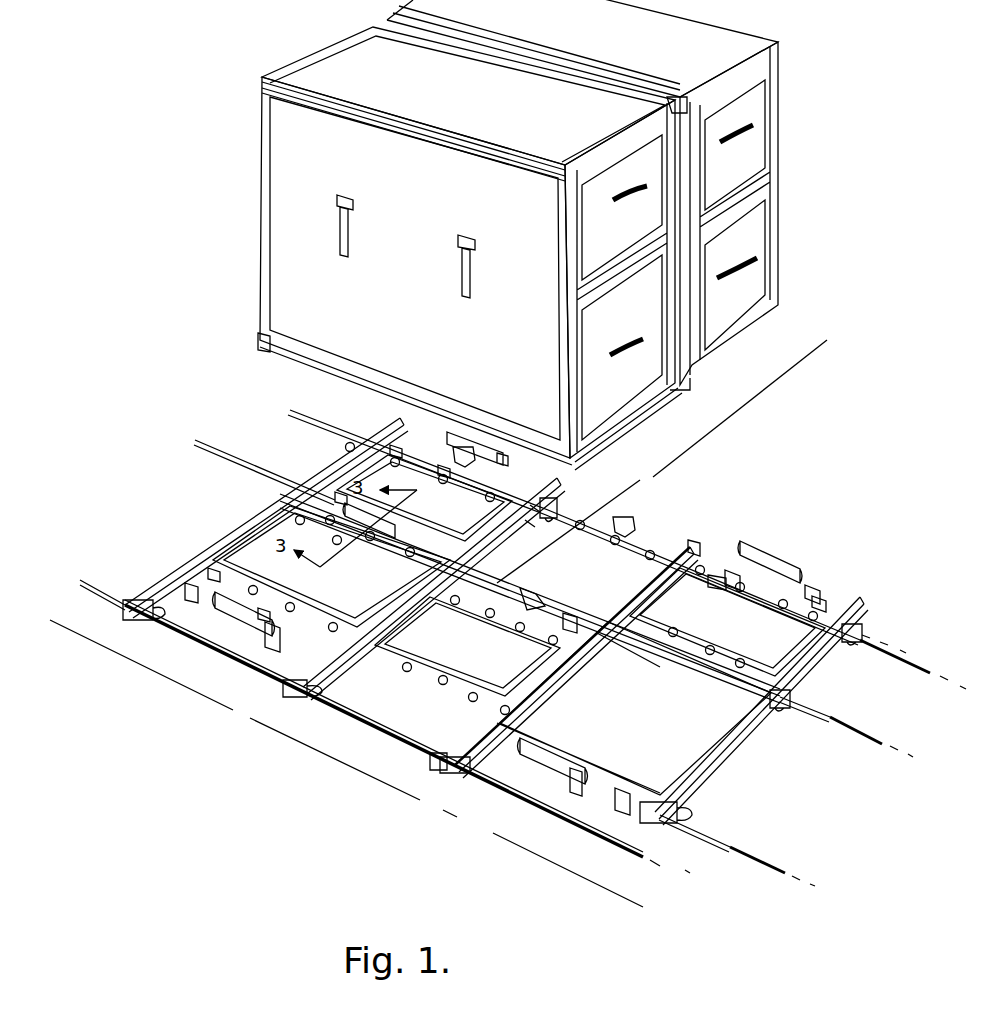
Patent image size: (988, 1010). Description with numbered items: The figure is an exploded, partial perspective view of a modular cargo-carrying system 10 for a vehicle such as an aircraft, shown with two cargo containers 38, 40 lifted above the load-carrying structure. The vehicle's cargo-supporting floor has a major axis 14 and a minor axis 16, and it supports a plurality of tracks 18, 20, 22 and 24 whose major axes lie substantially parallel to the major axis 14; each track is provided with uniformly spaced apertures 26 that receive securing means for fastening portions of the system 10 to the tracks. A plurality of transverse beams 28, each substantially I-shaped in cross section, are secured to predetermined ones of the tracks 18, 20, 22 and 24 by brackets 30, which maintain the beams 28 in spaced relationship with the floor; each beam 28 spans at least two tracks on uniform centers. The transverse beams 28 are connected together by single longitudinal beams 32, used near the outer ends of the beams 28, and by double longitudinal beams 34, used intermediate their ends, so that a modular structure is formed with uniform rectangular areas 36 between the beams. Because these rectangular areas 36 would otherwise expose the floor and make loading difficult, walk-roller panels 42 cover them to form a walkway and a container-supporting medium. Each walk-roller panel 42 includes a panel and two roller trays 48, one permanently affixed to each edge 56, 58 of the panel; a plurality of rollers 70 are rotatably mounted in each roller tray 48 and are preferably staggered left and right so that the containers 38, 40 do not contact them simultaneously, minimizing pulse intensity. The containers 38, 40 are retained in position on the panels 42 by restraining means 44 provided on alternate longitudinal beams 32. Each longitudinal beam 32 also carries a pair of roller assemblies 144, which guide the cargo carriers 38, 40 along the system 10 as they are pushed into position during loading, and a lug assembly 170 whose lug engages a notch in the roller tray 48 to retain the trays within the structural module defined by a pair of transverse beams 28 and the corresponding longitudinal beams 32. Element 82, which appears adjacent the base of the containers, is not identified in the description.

The cargo-carrying system 10 is at (797, 475).
The major axis 14 is at (150, 677).
The minor axis 16 is at (717, 428).
The track 18 is at (663, 872).
The track 20 is at (753, 839).
The track 22 is at (861, 720).
The track 24 is at (906, 647).
The apertures 26 is at (872, 648).
The transverse beam 28 is at (217, 543).
The bracket 30 is at (552, 506).
The single longitudinal beam 32 is at (412, 748).
The double longitudinal beam 34 is at (566, 612).
The rectangular area 36 is at (689, 540).
The cargo container 38 is at (413, 259).
The cargo container 40 is at (681, 64).
The walk-roller panel 42 is at (474, 522).
The restraining means 44 is at (268, 637).
The roller tray 48 is at (731, 576).
The edge 56 is at (812, 588).
The edge 58 is at (498, 594).
The roller 70 is at (340, 495).
The container base 82 is at (650, 402).
The roller assembly 144 is at (580, 613).
The lug assembly 170 is at (458, 458).